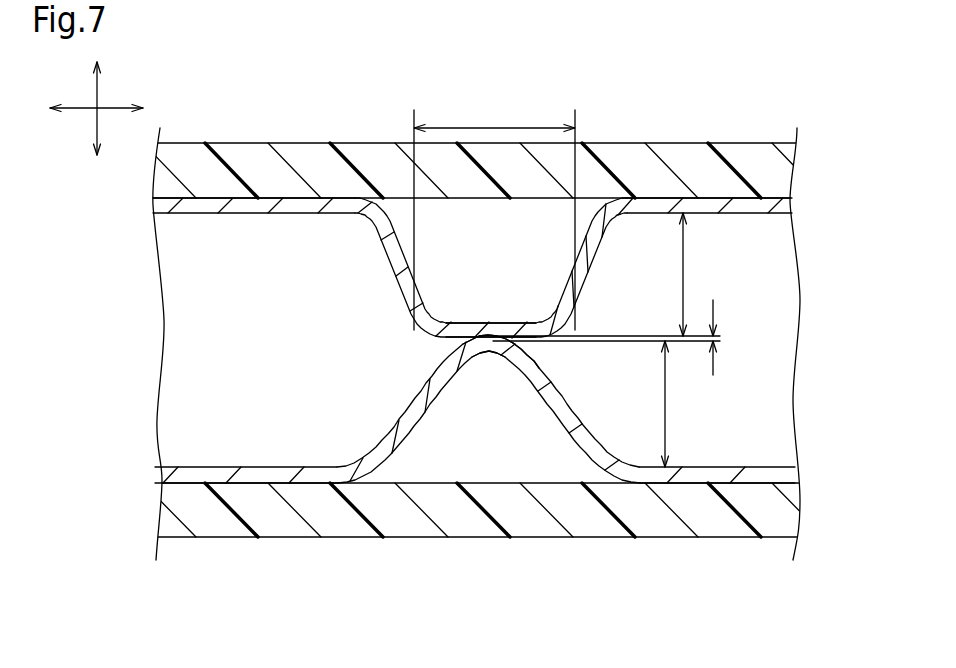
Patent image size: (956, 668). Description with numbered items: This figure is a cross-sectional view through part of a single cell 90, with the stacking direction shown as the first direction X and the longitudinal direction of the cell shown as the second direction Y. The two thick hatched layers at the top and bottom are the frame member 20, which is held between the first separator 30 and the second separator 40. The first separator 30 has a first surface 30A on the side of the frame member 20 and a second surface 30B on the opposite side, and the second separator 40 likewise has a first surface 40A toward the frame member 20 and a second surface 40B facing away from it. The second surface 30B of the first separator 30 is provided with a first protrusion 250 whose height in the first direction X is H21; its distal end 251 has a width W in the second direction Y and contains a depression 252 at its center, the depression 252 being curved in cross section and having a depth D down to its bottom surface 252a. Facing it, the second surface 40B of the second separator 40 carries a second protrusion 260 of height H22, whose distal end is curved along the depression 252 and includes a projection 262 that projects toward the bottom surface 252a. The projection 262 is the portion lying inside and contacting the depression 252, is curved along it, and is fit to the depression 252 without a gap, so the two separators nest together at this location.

The frame member 20 is at (737, 133).
The single cell 90 is at (472, 337).
The first separator 30 is at (528, 244).
The first surface of the first separator 30A is at (792, 198).
The second surface of the first separator 30B is at (792, 213).
The second separator 40 is at (418, 442).
The first surface of the second separator 40A is at (162, 483).
The second surface of the second separator 40B is at (162, 468).
The first protrusion 250 is at (604, 280).
The distal end of the first protrusion 251 is at (533, 349).
The depression 252 is at (483, 392).
The bottom surface of the depression 252a is at (487, 353).
The second protrusion 260 is at (410, 403).
The projection 262 is at (520, 322).
The width of the distal end W is at (493, 127).
The height of the first protrusion H21 is at (686, 267).
The height of the second protrusion H22 is at (668, 407).
The depth of the depression D is at (716, 339).
The first direction X is at (99, 95).
The second direction Y is at (88, 109).